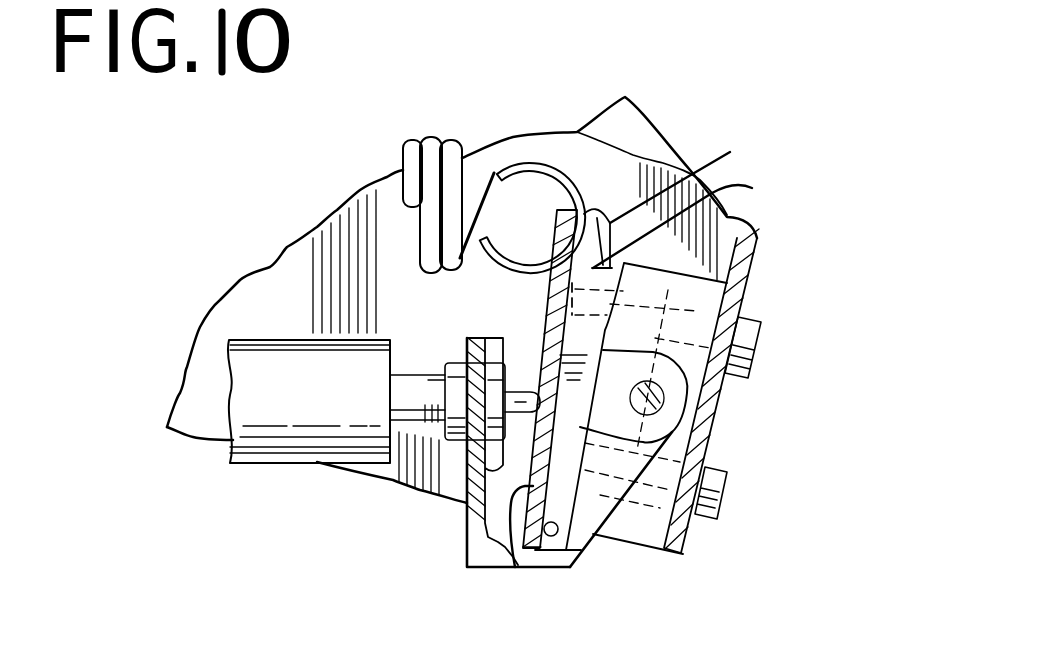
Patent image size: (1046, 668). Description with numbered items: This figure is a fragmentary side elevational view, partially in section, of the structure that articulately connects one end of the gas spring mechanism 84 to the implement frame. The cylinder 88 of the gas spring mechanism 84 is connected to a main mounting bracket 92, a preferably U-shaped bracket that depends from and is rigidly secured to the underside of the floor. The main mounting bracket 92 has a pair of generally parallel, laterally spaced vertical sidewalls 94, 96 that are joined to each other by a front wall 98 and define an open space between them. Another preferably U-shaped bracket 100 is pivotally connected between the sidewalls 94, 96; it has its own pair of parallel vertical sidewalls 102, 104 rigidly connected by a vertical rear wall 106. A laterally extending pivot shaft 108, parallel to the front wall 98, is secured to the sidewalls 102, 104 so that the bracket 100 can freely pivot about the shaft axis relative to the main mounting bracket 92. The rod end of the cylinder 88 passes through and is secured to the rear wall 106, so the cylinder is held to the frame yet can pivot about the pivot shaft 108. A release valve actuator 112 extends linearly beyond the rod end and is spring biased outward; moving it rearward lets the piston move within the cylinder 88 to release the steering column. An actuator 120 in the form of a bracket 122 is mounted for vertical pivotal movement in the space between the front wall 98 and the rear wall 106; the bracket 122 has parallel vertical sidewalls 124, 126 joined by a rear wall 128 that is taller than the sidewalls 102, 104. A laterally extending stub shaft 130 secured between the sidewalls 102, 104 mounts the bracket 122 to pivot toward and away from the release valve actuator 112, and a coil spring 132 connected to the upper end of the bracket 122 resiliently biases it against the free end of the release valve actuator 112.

The gas spring mechanism 84 is at (260, 467).
The cylinder 88 is at (307, 411).
The main mounting bracket 92 is at (748, 282).
The vertical sidewall 94 is at (630, 123).
The vertical sidewall 96 is at (270, 287).
The front wall 98 is at (717, 415).
The bracket 100 is at (590, 545).
The vertical sidewall 102 is at (478, 548).
The vertical sidewall 104 is at (498, 343).
The vertical rear wall 106 is at (467, 487).
The pivot shaft 108 is at (662, 392).
The release valve actuator 112 is at (525, 391).
The actuator 120 is at (613, 333).
The bracket 122 is at (698, 436).
The vertical sidewall 124 is at (697, 176).
The vertical sidewall 126 is at (694, 219).
The rear wall 128 is at (516, 567).
The stub shaft 130 is at (553, 537).
The coil spring 132 is at (445, 145).